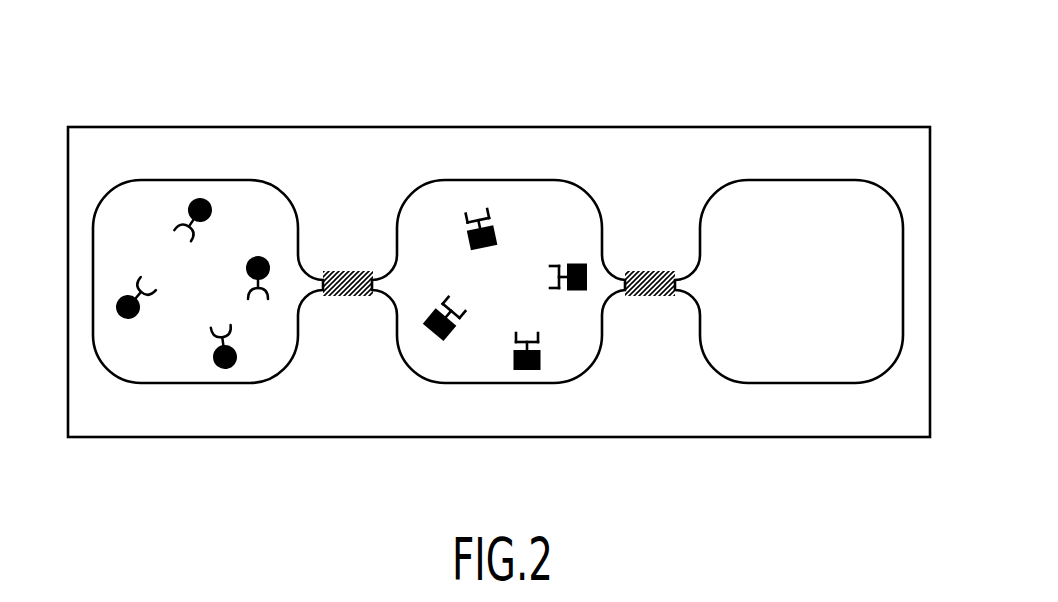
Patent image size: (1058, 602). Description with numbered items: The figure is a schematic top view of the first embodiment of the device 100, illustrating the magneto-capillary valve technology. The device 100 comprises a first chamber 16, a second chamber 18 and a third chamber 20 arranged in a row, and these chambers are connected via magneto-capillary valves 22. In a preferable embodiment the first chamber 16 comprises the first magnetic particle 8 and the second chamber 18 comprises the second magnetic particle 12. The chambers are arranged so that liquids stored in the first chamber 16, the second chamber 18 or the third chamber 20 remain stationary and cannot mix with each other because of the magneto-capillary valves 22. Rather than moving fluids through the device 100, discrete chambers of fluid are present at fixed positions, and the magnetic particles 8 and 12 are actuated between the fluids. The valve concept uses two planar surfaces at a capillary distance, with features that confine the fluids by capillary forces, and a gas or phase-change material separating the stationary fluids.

The device 100 is at (836, 81).
The first chamber 16 is at (160, 367).
The first magnetic particle 8 is at (228, 368).
The second chamber 18 is at (468, 367).
The second magnetic particle 12 is at (577, 263).
The third chamber 20 is at (790, 365).
The magneto-capillary valve 22 is at (353, 296).